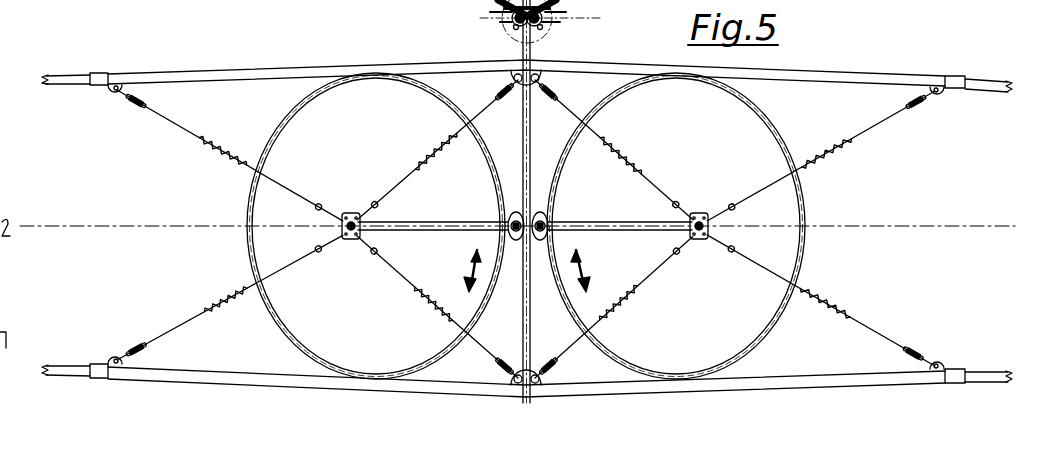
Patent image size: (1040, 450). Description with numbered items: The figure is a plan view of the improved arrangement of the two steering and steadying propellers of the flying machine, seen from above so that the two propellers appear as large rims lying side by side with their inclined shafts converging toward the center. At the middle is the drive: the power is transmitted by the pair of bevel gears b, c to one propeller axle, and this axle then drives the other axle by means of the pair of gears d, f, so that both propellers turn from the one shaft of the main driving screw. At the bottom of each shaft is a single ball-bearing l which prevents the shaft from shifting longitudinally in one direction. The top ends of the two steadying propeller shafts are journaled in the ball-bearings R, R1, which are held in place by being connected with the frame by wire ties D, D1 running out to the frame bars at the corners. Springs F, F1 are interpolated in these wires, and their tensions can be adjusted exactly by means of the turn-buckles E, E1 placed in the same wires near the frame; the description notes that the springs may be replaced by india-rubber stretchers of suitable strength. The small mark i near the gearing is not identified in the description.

The ball-bearing R is at (698, 240).
The ball-bearing R1 is at (351, 240).
The wire tie D is at (779, 273).
The wire tie D1 is at (403, 177).
The spring F is at (845, 312).
The spring F1 is at (435, 155).
The turn-buckle E is at (914, 357).
The turn-buckle E1 is at (503, 90).
The single ball-bearing l is at (505, 15).
The bevel gear f is at (508, 20).
The bevel gear b is at (515, 29).
The bevel gear c is at (548, 21).
The bevel gear d is at (545, 28).
The pin i is at (566, 12).